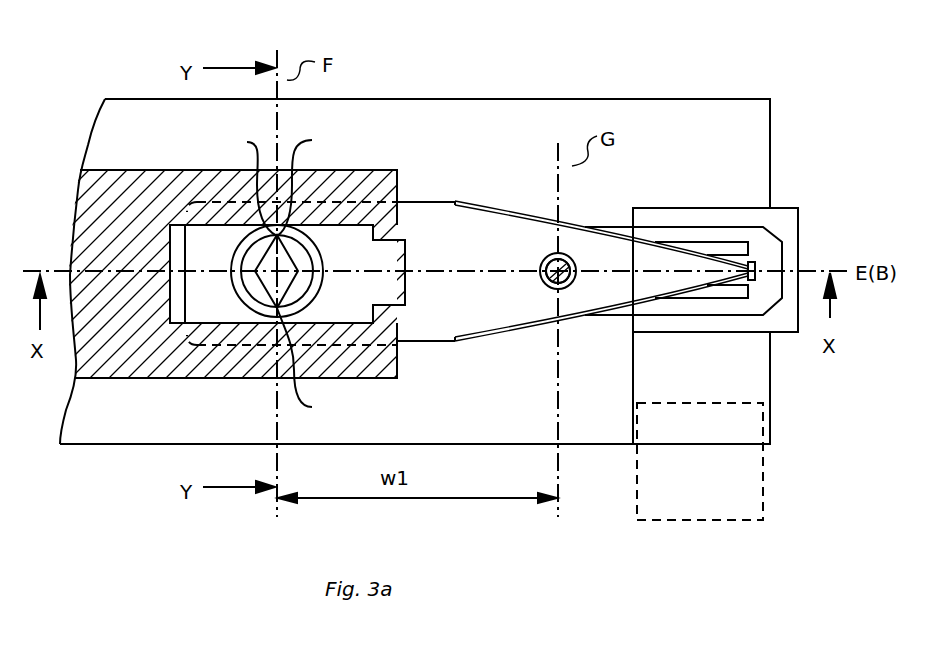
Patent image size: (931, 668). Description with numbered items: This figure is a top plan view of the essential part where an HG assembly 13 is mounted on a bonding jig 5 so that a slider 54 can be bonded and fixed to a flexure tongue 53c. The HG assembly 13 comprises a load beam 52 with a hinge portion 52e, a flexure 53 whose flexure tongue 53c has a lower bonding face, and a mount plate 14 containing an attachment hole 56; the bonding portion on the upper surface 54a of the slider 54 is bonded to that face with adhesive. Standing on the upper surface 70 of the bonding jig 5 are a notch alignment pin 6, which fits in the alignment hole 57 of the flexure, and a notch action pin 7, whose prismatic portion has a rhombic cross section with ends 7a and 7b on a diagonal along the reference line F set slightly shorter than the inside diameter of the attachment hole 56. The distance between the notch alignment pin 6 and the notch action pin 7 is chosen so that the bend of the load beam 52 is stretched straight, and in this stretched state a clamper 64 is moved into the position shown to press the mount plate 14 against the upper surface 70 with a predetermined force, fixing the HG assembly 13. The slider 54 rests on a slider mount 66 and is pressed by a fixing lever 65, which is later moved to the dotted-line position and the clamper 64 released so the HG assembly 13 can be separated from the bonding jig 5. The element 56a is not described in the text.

The bonding jig 5 is at (530, 60).
The upper surface of the bonding jig 70 is at (735, 118).
The clamper 64 is at (142, 362).
The mount plate 14 is at (212, 305).
The load beam 52 is at (470, 312).
The hinge portion 52e is at (420, 341).
The HG assembly 13 is at (486, 178).
The slider 54 is at (782, 208).
The upper surface of the slider 54a is at (792, 245).
The flexure 53 is at (683, 236).
The flexure tongue 53c is at (728, 298).
The slider mount 66 is at (772, 334).
The fixing lever 65 is at (748, 424).
The notch alignment pin 6 is at (570, 253).
The alignment hole 57 is at (542, 268).
The bearing ring 56a is at (242, 259).
The notch action pin 7 is at (293, 266).
The attachment hole 56 is at (244, 186).
The end of prismatic portion 7a is at (307, 183).
The end of prismatic portion 7b is at (308, 364).